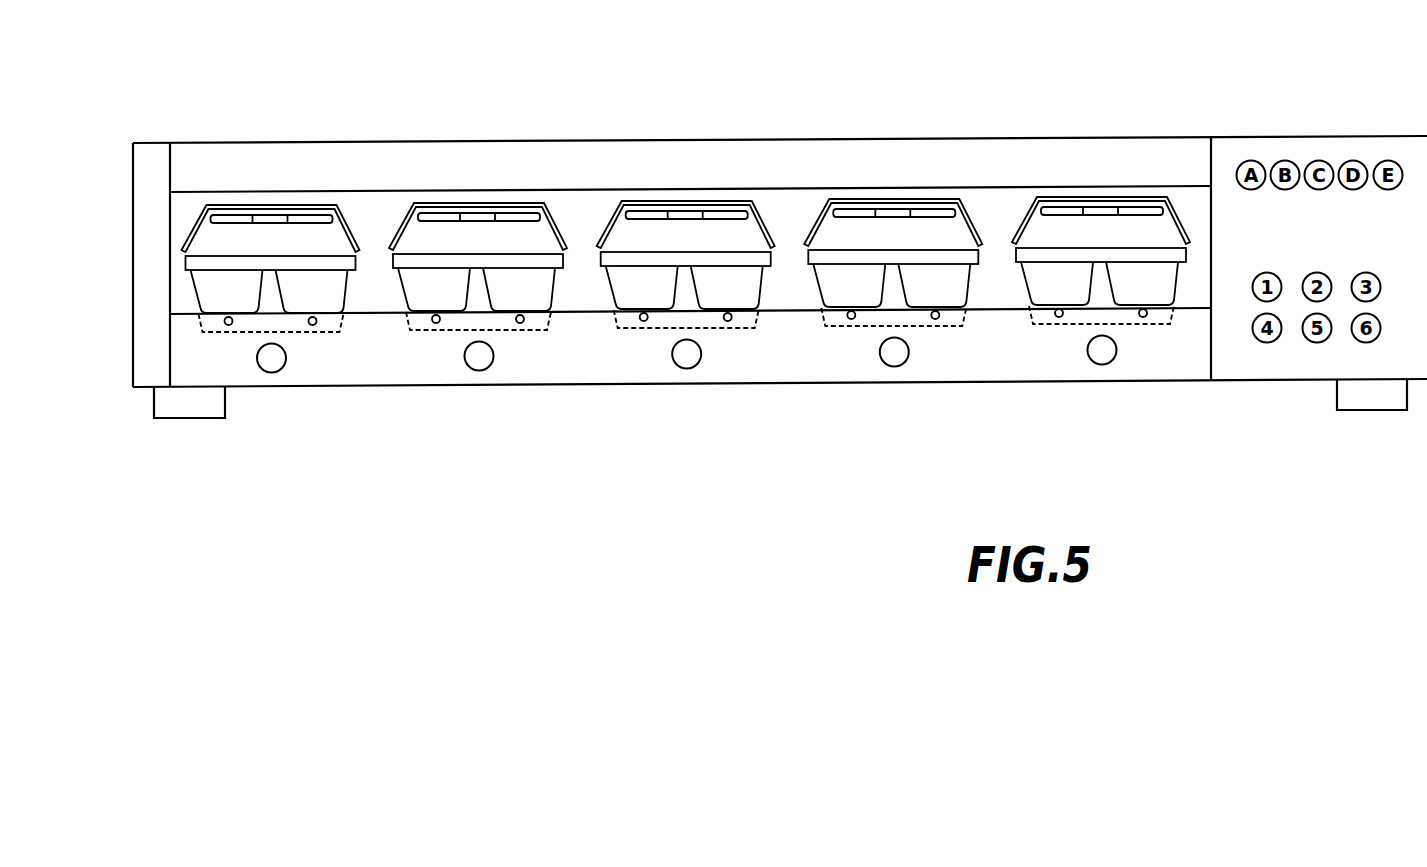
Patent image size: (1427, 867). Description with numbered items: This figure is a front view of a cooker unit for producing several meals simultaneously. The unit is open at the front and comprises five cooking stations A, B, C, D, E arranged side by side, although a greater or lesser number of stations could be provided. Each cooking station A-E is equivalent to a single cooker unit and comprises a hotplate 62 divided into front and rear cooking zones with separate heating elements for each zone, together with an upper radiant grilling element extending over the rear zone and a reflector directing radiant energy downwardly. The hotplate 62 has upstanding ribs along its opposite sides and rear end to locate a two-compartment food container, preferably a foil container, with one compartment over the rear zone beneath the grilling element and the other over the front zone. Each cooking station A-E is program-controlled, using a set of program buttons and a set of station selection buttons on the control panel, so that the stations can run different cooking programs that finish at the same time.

The hotplate 62 is at (455, 318).
The cooking station A is at (298, 105).
The cooking station B is at (473, 105).
The cooking station C is at (661, 104).
The cooking station D is at (893, 102).
The cooking station E is at (1088, 102).